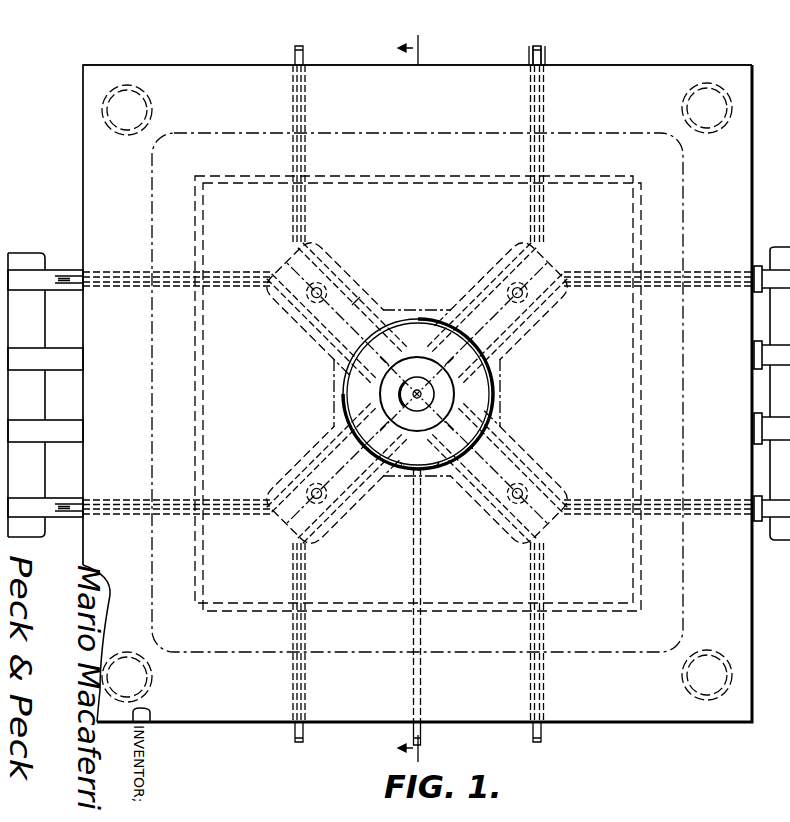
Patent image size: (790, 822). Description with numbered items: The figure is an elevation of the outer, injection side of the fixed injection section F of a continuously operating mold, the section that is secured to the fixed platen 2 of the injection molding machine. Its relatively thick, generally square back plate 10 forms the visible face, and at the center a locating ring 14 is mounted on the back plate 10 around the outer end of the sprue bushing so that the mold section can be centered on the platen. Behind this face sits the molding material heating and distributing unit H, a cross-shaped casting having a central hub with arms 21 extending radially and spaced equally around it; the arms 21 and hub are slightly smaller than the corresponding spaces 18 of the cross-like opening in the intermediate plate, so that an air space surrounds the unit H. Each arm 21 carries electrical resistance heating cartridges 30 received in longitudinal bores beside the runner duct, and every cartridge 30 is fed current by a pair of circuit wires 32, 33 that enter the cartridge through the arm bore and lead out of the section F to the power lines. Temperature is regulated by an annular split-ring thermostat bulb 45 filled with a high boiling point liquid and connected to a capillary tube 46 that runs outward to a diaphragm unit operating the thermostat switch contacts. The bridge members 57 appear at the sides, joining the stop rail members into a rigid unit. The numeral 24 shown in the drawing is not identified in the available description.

The back plate 10 is at (675, 82).
The fixed injection section F is at (626, 84).
The transverse bridge members 57 is at (46, 336).
The heating cartridges 30 is at (362, 288).
The heater plates 24 is at (345, 276).
The spaces of cross-like opening 18 is at (540, 336).
The arms 21 is at (530, 346).
The locating ring 14 is at (474, 396).
The thermostat bulb 45 is at (452, 462).
The capillary tube 46 is at (421, 710).
The circuit wire 32 is at (540, 48).
The circuit wire 33 is at (543, 54).
The molding material heating and distributing unit H is at (364, 294).
The fixed platen 2 is at (416, 398).